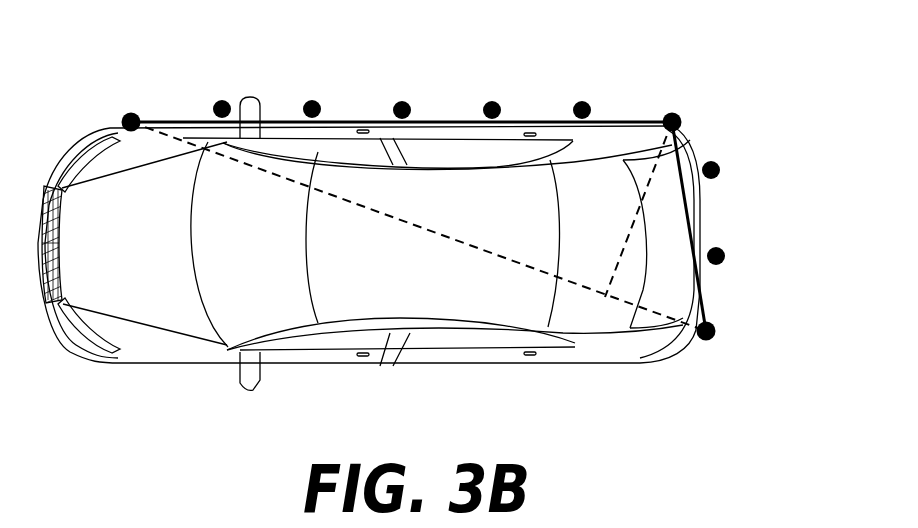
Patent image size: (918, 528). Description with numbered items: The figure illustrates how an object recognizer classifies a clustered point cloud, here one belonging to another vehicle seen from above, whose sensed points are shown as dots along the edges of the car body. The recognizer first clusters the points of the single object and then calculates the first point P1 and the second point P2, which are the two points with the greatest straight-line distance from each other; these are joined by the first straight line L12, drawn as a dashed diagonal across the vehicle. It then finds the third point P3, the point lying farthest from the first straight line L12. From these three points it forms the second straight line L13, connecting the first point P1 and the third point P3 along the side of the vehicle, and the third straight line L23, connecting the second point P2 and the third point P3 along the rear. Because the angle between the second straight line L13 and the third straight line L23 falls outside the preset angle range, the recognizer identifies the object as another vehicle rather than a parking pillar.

The first point P1 is at (130, 113).
The second point P2 is at (716, 332).
The third point P3 is at (676, 113).
The first straight line L12 is at (177, 139).
The second straight line L13 is at (433, 121).
The third straight line L23 is at (693, 212).